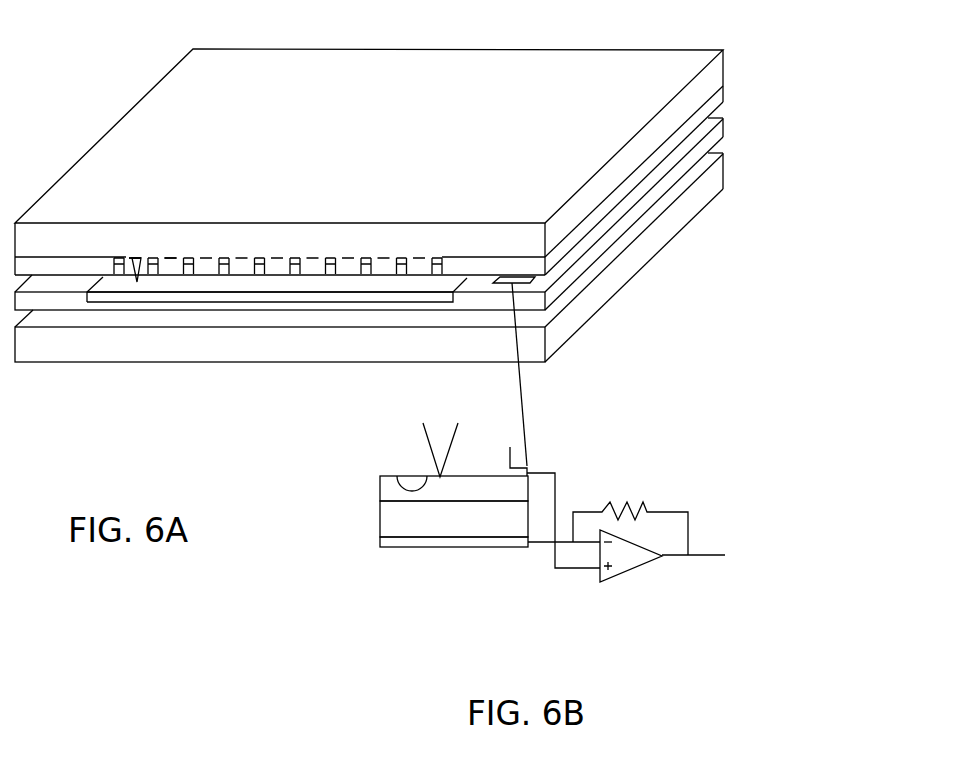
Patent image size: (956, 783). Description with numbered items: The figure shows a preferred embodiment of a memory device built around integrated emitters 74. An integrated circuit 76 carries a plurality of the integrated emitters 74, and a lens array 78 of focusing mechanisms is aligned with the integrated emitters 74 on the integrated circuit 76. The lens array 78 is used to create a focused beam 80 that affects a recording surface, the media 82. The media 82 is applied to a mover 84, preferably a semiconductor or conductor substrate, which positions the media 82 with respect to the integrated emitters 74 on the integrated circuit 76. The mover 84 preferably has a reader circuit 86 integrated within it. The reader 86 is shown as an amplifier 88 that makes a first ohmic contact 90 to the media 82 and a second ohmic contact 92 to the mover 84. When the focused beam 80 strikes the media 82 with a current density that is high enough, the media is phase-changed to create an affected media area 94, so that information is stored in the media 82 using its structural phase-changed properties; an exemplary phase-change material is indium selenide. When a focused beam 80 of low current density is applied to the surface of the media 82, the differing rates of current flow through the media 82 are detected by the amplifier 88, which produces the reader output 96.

In FIG. 6A, the integrated emitters 74 is at (172, 259).
In FIG. 6A, the integrated circuit 76 is at (724, 80).
In FIG. 6A, the lens array 78 is at (397, 259).
In FIG. 6A, the focused beam 80 is at (140, 281).
In FIG. 6B, the focused beam 80 is at (415, 440).
In FIG. 6A, the media 82 is at (380, 292).
In FIG. 6B, the media 82 is at (380, 493).
In FIG. 6A, the mover 84 is at (712, 142).
In FIG. 6B, the mover 84 is at (380, 520).
In FIG. 6A, the reader circuit 86 is at (530, 283).
In FIG. 6B, the reader circuit 86 is at (560, 453).
In FIG. 6B, the amplifier 88 is at (641, 595).
In FIG. 6B, the first ohmic contact 90 is at (509, 451).
In FIG. 6A, the second ohmic contact 92 is at (712, 200).
In FIG. 6B, the second ohmic contact 92 is at (512, 548).
In FIG. 6B, the affected media area 94 is at (412, 476).
In FIG. 6B, the reader output 96 is at (707, 553).